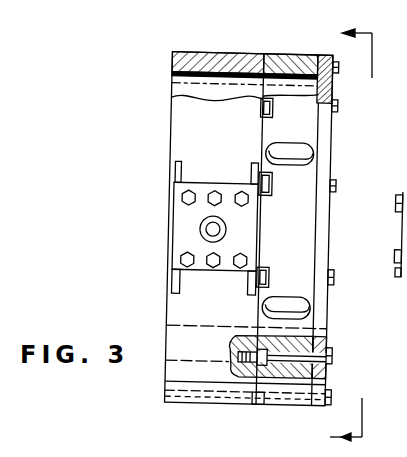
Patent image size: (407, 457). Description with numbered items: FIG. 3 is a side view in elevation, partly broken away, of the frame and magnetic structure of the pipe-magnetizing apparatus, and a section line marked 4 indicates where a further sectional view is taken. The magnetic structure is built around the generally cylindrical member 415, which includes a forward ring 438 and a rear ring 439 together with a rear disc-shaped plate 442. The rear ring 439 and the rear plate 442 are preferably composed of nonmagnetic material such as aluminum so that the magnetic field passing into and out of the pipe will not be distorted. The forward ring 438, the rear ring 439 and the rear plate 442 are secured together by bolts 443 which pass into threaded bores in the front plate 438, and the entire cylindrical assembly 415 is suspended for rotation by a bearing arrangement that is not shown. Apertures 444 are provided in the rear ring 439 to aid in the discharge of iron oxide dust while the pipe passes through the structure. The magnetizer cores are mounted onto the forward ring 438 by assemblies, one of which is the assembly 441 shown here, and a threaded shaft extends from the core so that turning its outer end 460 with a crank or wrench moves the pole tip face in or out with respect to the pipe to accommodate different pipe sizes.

The generally cylindrical member 415 is at (213, 51).
The forward ring 438 is at (197, 393).
The rear ring 439 is at (290, 52).
The assembly 441 is at (185, 215).
The rear disc-shaped plate 442 is at (331, 90).
The bolts 443 is at (330, 366).
The apertures 444 is at (313, 145).
The outer end of the shaft 460 is at (202, 237).
The section line 4- 4 is at (343, 234).